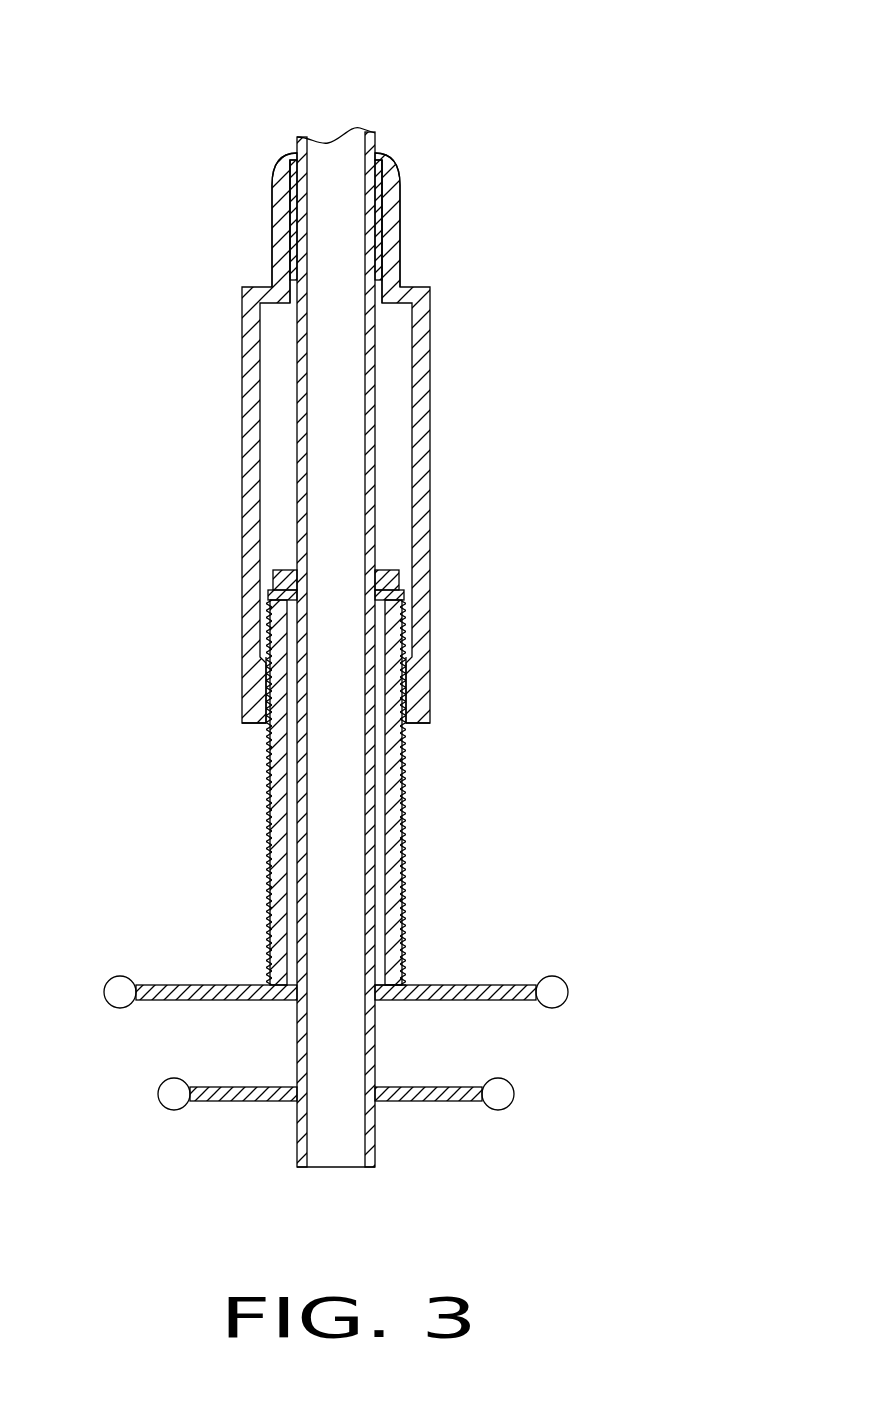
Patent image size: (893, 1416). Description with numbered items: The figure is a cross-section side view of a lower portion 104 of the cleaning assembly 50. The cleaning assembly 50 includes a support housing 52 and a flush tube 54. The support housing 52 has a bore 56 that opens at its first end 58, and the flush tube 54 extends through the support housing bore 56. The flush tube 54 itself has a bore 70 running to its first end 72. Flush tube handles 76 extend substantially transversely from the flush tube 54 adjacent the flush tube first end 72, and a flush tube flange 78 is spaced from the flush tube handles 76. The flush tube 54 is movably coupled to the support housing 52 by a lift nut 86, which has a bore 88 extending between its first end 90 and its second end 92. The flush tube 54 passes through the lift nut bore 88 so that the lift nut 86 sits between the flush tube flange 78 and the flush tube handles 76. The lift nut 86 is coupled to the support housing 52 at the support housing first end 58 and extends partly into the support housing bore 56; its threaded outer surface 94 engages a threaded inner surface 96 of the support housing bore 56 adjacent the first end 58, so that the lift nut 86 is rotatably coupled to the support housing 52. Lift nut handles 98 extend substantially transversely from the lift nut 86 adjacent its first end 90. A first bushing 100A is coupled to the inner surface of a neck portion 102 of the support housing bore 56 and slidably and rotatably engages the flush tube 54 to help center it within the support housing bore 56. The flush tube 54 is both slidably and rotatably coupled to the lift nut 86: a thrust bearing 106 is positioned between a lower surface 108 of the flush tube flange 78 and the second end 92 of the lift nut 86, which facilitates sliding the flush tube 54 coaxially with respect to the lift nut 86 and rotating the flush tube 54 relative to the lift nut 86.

The cleaning assembly 50 is at (250, 116).
The support housing 52 is at (422, 322).
The flush tube 54 is at (377, 485).
The support housing bore 56 is at (418, 403).
The support housing first end 58 is at (420, 725).
The flush tube bore 70 is at (360, 830).
The flush tube first end 72 is at (375, 1128).
The flush tube handles 76 is at (237, 1085).
The flush tube flange 78 is at (392, 566).
The lift nut 86 is at (275, 862).
The lift nut bore 88 is at (362, 880).
The lift nut first end 90 is at (412, 974).
The lift nut second end 92 is at (412, 611).
The threaded outer surface 94 is at (405, 800).
The threaded inner surface 96 is at (280, 677).
The lift nut handles 98 is at (152, 1000).
The first bushing 100A is at (293, 234).
The neck portion 102 is at (404, 211).
The lower portion 104 is at (412, 105).
The thrust bearing 106 is at (273, 597).
The lower surface 108 is at (280, 570).